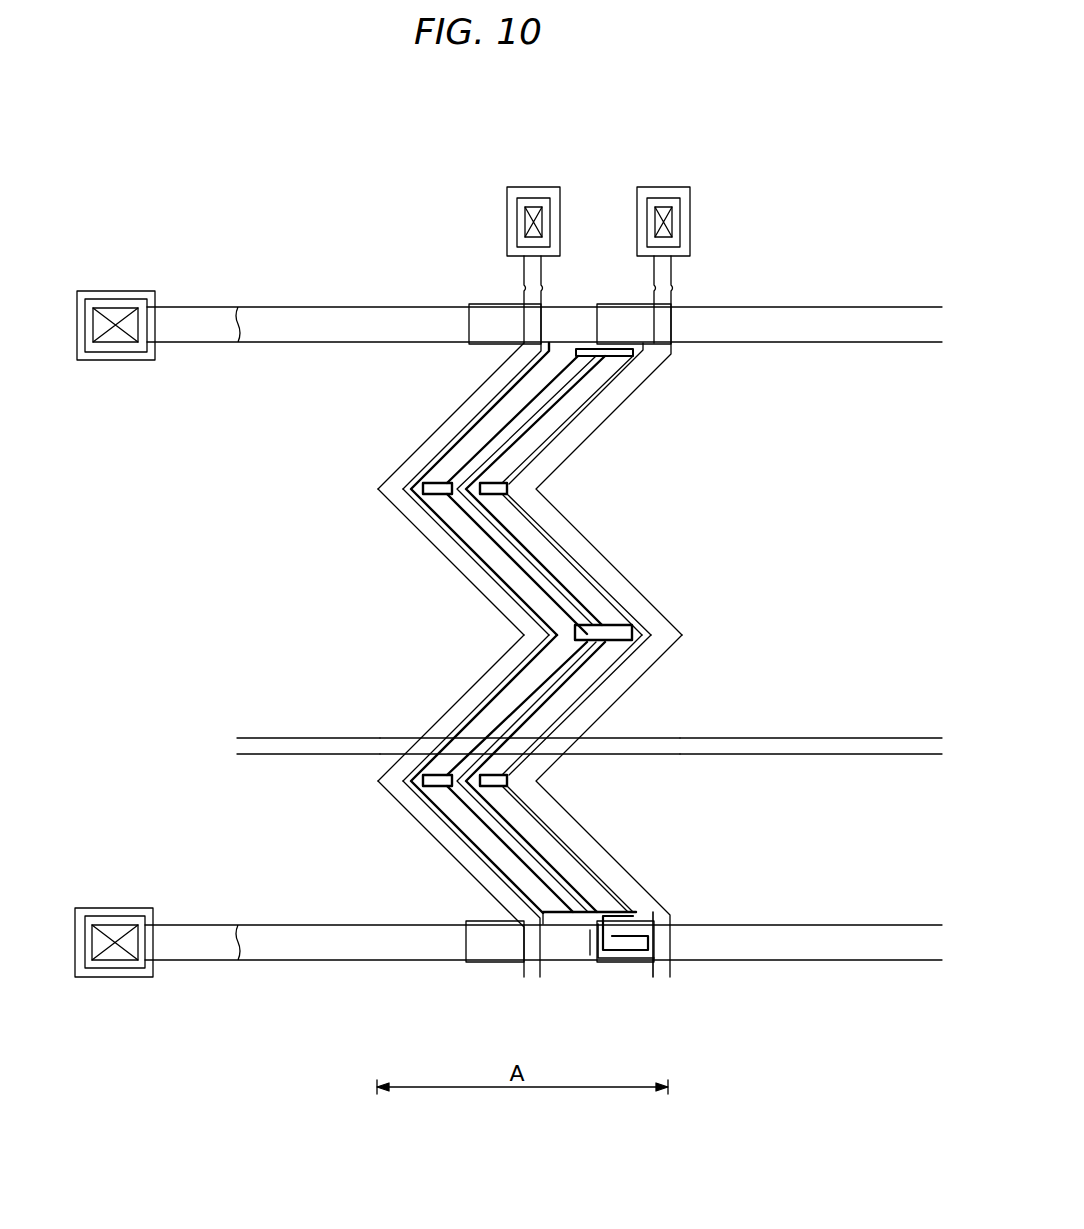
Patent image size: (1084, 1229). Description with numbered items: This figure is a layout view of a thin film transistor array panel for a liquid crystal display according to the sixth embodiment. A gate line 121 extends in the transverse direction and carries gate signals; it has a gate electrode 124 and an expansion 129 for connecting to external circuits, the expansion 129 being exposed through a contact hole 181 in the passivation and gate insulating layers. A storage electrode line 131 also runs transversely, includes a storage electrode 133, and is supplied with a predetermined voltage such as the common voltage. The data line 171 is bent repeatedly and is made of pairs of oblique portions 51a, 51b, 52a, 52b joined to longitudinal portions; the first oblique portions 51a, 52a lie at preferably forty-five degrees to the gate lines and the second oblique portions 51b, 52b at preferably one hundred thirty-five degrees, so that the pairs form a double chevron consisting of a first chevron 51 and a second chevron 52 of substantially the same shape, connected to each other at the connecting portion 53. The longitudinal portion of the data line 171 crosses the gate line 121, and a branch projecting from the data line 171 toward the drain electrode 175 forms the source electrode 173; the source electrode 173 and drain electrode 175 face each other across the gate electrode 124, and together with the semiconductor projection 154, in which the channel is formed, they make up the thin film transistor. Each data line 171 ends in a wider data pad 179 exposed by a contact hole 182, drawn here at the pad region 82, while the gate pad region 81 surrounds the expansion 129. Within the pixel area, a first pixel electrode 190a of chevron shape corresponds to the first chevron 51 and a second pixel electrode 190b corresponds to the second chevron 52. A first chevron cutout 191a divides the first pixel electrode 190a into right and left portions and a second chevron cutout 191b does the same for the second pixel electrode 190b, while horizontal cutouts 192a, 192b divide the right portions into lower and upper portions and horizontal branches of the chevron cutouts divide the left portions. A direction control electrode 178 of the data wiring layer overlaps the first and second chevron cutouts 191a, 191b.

The gate line 121 is at (447, 962).
The gate electrode 124 is at (603, 965).
The storage electrode line 131 is at (589, 774).
The storage electrode 133 is at (520, 762).
The projection 154 is at (600, 950).
The data line 171 is at (469, 616).
The source electrode 173 is at (672, 958).
The drain electrode 175 is at (634, 912).
The direction control electrode 178 is at (588, 662).
The data pad 179 is at (650, 221).
The contact hole 181 is at (124, 964).
The contact hole 182 is at (672, 214).
The first pixel electrode 190a is at (566, 410).
The second pixel electrode 190b is at (576, 708).
The first chevron cutout 191a is at (520, 440).
The second chevron cutout 191b is at (562, 878).
The horizontal cutout 192a is at (505, 492).
The horizontal cutout 192b is at (505, 784).
The first chevron 51 is at (409, 489).
The first oblique portion 51a is at (396, 469).
The second oblique portion 51b is at (433, 562).
The second chevron 52 is at (408, 806).
The first oblique portion 52a is at (430, 722).
The second oblique portion 52b is at (386, 782).
The connecting portion of data line 53 is at (676, 633).
The gate pad 81 is at (125, 946).
The data pad 82 is at (668, 263).
The expansion 129 is at (138, 913).